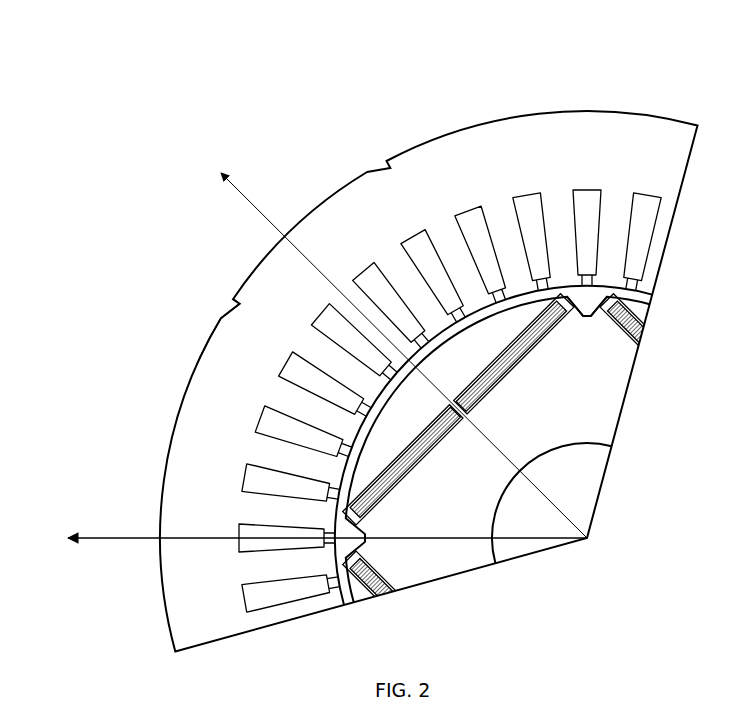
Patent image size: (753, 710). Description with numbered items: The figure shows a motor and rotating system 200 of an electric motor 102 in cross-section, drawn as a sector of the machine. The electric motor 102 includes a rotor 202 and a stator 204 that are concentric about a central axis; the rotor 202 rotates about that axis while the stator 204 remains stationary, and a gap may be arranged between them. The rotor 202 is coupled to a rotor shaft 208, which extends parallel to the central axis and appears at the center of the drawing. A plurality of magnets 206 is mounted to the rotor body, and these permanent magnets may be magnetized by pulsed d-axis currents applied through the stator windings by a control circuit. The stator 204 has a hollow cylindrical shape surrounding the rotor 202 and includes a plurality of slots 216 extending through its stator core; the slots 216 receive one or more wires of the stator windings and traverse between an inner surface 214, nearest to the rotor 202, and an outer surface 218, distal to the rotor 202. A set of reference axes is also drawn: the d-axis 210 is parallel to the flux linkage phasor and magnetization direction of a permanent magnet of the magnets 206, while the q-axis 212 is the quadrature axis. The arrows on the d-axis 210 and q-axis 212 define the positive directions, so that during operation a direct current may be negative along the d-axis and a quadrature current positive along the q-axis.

The motor and rotating system 200 is at (606, 38).
The electric motor 102 is at (565, 112).
The rotor 202 is at (474, 526).
The stator 204 is at (220, 526).
The plurality of magnets 206 is at (516, 352).
The rotor shaft 208 is at (587, 491).
The d-axis 210 is at (252, 200).
The q-axis 212 is at (85, 541).
The inner surface 214 is at (579, 294).
The plurality of slots 216 is at (278, 361).
The outer surface 218 is at (186, 361).